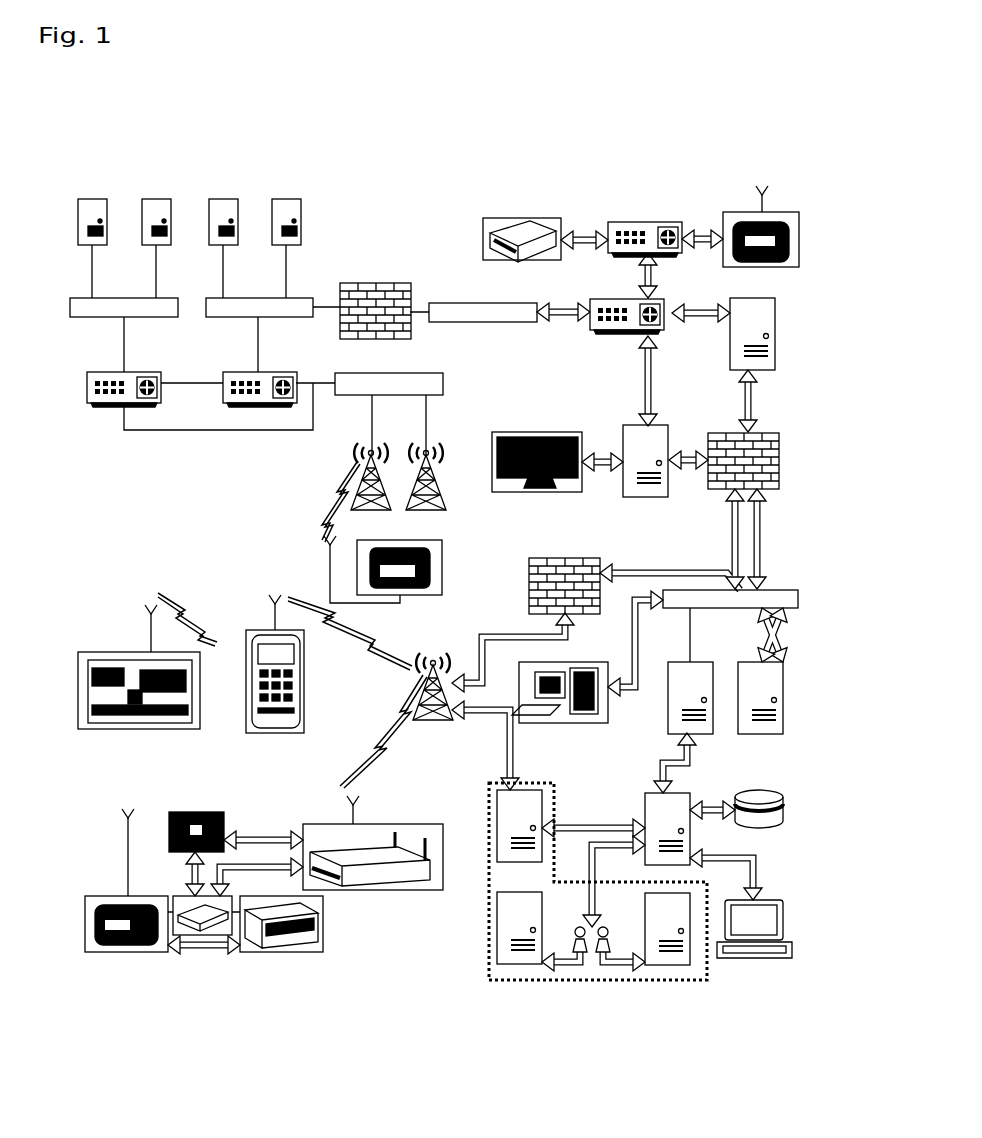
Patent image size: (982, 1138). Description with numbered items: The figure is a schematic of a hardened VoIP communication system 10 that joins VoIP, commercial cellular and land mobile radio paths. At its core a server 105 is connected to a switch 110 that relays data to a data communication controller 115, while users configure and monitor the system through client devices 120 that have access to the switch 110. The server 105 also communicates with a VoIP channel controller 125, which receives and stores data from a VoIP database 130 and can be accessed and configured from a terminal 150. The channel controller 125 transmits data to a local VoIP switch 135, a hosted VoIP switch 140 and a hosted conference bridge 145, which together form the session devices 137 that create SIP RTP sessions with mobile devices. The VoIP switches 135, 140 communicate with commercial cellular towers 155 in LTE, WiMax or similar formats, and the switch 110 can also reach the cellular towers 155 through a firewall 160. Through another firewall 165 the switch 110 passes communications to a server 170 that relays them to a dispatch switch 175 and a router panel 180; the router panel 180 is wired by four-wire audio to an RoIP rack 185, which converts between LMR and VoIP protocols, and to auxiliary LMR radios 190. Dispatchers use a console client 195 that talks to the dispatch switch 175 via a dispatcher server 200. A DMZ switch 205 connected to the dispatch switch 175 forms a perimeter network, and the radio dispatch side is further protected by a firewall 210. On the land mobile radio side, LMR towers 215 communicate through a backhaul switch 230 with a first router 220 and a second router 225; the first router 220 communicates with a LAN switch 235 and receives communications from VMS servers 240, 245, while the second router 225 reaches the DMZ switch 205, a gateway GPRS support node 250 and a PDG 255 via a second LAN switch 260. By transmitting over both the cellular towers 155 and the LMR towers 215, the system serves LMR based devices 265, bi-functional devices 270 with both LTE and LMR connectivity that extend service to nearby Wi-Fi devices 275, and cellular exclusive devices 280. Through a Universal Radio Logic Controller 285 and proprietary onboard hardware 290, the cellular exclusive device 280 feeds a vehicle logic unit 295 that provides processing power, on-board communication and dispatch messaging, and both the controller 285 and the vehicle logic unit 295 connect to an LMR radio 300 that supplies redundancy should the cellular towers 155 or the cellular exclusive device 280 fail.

The hardened VoIP communication system 10 is at (773, 75).
The server 105 is at (670, 705).
The switch 110 is at (790, 593).
The data communication controller 115 is at (778, 725).
The client devices 120 is at (555, 722).
The VoIP channel controller 125 is at (648, 802).
The VoIP database 130 is at (777, 812).
The local VoIP switch 135 is at (512, 838).
The session devices 137 is at (598, 983).
The hosted VoIP switch 140 is at (500, 953).
The hosted conference bridge 145 is at (670, 957).
The terminal 150 is at (785, 957).
The commercial cellular towers 155 is at (438, 710).
The firewall 160 is at (532, 575).
The firewall 165 is at (782, 468).
The server 170 is at (770, 313).
The dispatch switch 175 is at (620, 327).
The router panel 180 is at (652, 233).
The RoIP rack 185 is at (532, 227).
The auxiliary LMR radios 190 is at (780, 220).
The console client 195 is at (548, 433).
The dispatcher server 200 is at (637, 488).
The DMZ switch 205 is at (488, 313).
The firewall 210 is at (385, 287).
The LMR towers 215 is at (442, 508).
The first router 220 is at (100, 398).
The second router 225 is at (236, 398).
The backhaul switch 230 is at (438, 388).
The LAN switch 235 is at (105, 310).
The VMS server 240 is at (83, 203).
The VMS server 245 is at (165, 203).
The gateway GPRS support node 250 is at (288, 205).
The PDG 255 is at (227, 203).
The second LAN switch 260 is at (233, 310).
The LMR based devices 265 is at (435, 563).
The bi-functional devices 270 is at (263, 635).
The Wi-Fi devices 275 is at (123, 662).
The cellular exclusive devices 280 is at (408, 832).
The Universal Radio Logic Controller 285 is at (218, 928).
The proprietary onboard hardware 290 is at (195, 812).
The vehicle logic unit 295 is at (318, 942).
The LMR radio 300 is at (92, 942).